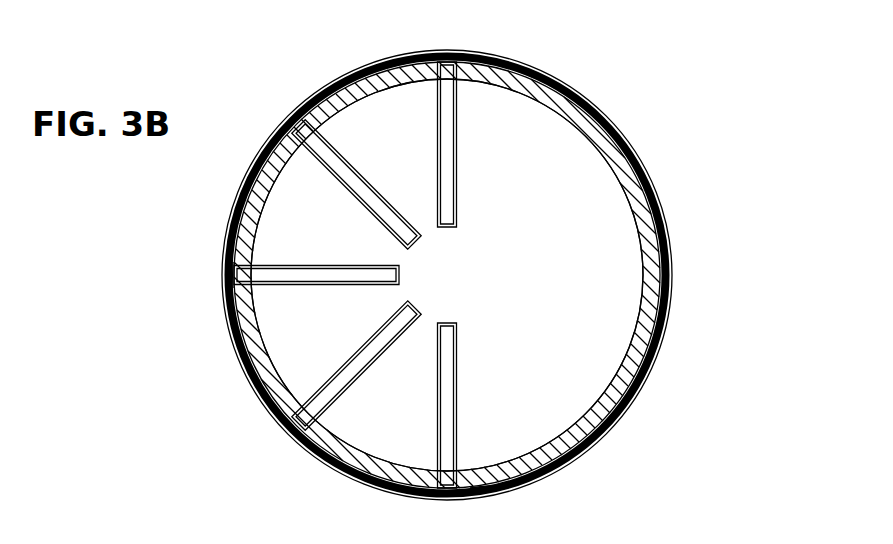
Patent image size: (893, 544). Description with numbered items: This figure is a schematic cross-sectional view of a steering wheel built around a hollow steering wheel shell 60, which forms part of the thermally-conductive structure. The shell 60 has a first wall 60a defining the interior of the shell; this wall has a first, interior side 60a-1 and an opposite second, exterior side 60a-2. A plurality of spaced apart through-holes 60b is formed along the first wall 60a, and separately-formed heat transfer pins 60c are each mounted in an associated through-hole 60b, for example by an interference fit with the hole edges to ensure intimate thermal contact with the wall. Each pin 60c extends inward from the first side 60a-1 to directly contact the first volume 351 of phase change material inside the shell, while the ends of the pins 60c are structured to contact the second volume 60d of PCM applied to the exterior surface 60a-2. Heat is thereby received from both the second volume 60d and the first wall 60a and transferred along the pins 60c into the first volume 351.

The steering wheel shell 60 is at (688, 116).
The first wall 60a is at (648, 315).
The first side 60a-1 is at (655, 258).
The second side 60a-2 is at (667, 327).
The through-holes 60b is at (492, 60).
The pins 60c is at (445, 157).
The second volume of PCM 60d is at (583, 95).
The first volume of phase change material 351 is at (573, 267).